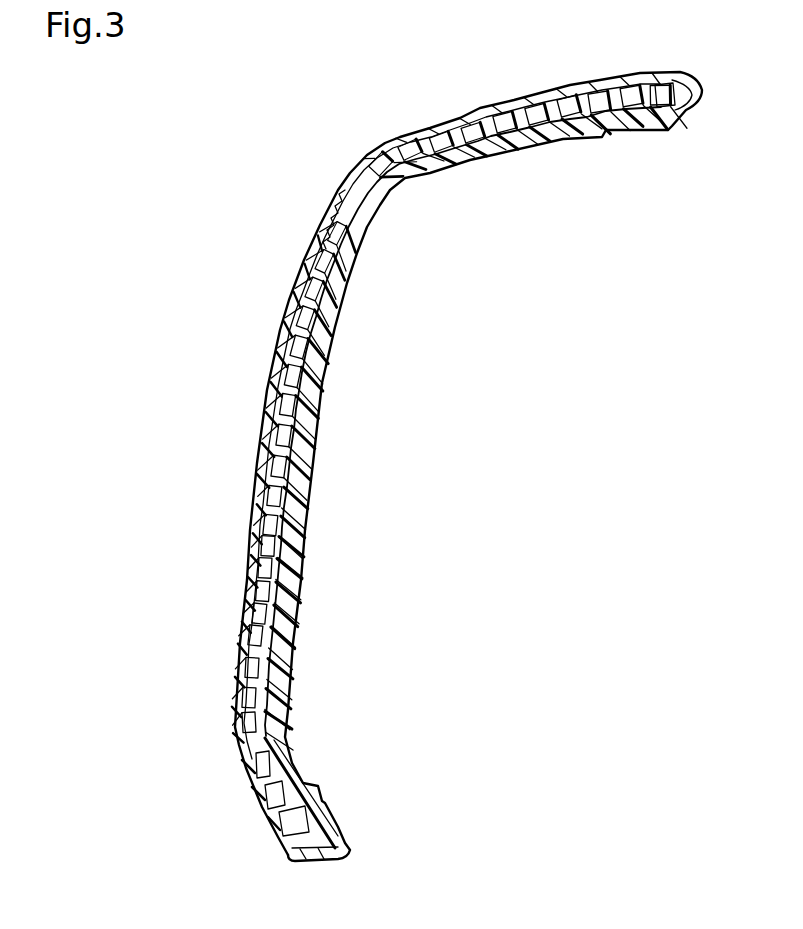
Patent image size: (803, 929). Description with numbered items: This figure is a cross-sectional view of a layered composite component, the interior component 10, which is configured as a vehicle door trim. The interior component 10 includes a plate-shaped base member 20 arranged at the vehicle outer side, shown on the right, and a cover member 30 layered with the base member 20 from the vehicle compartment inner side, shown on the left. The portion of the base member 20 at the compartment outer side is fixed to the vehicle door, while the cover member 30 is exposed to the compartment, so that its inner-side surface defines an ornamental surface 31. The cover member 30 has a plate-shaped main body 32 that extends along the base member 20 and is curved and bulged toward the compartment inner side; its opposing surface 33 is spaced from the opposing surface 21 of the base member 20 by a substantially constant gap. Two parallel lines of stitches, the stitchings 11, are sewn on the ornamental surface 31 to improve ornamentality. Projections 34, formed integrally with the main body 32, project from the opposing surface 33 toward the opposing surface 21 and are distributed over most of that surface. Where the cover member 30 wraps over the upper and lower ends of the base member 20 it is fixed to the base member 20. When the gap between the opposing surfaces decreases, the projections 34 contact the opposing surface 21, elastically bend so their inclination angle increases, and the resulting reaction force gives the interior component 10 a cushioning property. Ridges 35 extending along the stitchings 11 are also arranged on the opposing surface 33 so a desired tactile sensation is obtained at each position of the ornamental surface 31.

The interior component 10 is at (211, 135).
The stitchings 11 is at (323, 240).
The base member 20 is at (310, 454).
The opposing surface 21 is at (268, 503).
The cover member 30 is at (207, 347).
The ornamental surface 31 is at (351, 152).
The main body 32 is at (275, 359).
The opposing surface 33 is at (303, 302).
The projections 34 is at (490, 110).
The ridges 35 is at (345, 247).